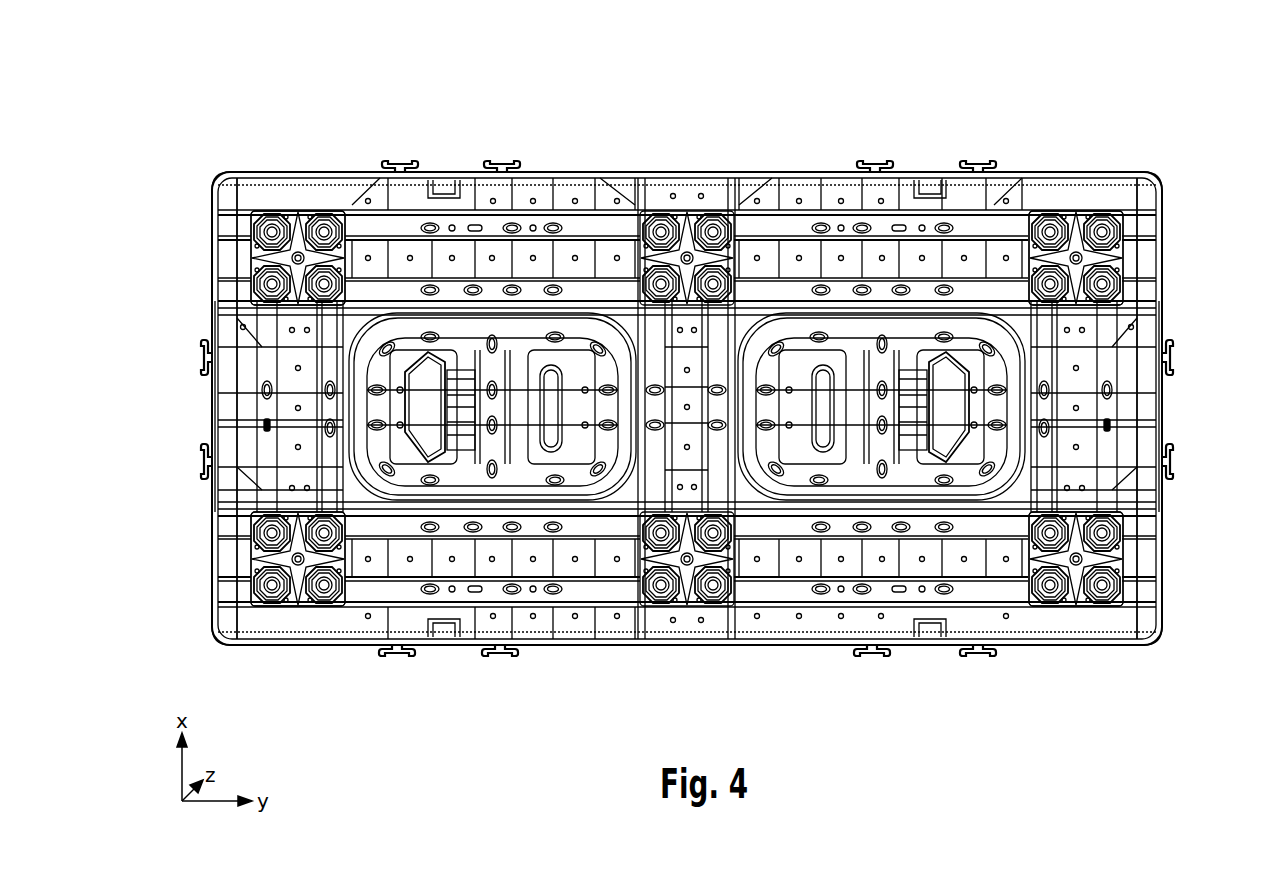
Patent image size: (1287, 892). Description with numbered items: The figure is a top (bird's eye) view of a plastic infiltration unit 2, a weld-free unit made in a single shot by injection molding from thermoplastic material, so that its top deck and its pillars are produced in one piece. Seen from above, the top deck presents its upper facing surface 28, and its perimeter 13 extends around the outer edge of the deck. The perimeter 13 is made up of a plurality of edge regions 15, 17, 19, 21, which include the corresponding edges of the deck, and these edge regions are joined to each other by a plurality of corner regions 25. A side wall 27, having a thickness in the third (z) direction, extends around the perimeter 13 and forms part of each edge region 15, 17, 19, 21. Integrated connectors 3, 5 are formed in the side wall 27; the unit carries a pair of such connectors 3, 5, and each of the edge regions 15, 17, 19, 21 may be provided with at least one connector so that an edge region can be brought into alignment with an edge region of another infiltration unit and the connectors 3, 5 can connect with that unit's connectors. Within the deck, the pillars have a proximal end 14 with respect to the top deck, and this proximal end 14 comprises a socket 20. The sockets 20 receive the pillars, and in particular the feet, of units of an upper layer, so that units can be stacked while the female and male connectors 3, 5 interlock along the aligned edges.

The plastic infiltration unit 2 is at (770, 130).
The connector 3 is at (398, 164).
The connector 5 is at (502, 164).
The perimeter 13 is at (1030, 172).
The proximal end 14 is at (1100, 236).
The edge region 15 is at (732, 646).
The edge region 17 is at (606, 172).
The edge region 19 is at (1162, 287).
The socket 20 is at (1110, 246).
The edge region 21 is at (215, 281).
The corner region 25 is at (233, 176).
The side wall 27 is at (778, 646).
The upper facing surface 28 is at (642, 616).